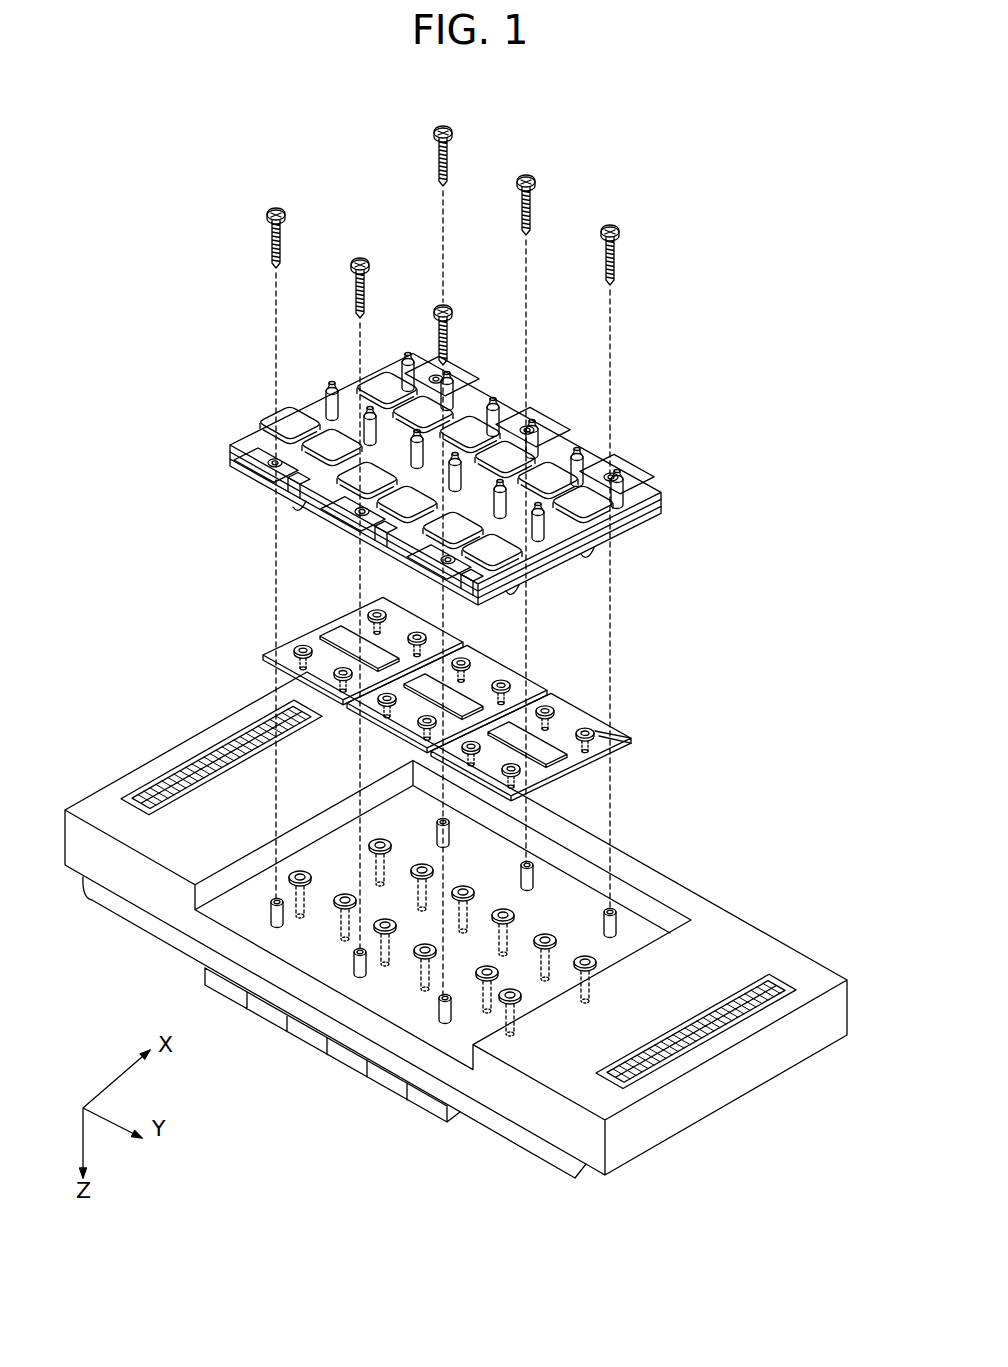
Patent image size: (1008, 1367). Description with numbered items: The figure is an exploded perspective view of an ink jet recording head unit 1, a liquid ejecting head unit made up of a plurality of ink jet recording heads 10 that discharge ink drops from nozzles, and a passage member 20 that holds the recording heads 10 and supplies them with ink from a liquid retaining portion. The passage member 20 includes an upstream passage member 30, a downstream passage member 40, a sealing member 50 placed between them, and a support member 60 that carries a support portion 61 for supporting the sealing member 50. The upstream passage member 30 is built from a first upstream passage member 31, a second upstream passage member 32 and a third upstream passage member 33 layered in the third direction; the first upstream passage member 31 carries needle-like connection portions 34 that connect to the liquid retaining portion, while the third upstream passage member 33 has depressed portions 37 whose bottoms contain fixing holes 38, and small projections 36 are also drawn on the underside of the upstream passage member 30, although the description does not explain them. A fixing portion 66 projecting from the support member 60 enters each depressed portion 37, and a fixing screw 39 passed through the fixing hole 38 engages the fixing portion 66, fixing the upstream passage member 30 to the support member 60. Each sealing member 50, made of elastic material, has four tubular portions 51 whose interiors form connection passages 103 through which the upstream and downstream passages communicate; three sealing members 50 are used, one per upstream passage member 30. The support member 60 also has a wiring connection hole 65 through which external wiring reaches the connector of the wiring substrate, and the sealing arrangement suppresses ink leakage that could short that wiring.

The ink jet recording head unit 1 is at (760, 262).
The ink jet recording head 10 is at (355, 1058).
The passage member 20 is at (722, 664).
The upstream passage member 30 is at (733, 460).
The first upstream passage member 31 is at (661, 495).
The second upstream passage member 32 is at (661, 503).
The third upstream passage member 33 is at (661, 512).
The connection portion 34 is at (626, 497).
The projection 36 is at (610, 565).
The depressed portion 37 is at (262, 483).
The fixing hole 38 is at (250, 445).
The fixing screw 39 is at (270, 212).
The downstream passage member 40 is at (498, 1123).
The sealing member 50 is at (631, 742).
The tubular portion 51 is at (617, 773).
The support member 60 is at (763, 1072).
The support portion 61 is at (558, 944).
The wiring connection hole 65 is at (160, 780).
The fixing portion 66 is at (630, 923).
The connection passage 103 is at (548, 708).